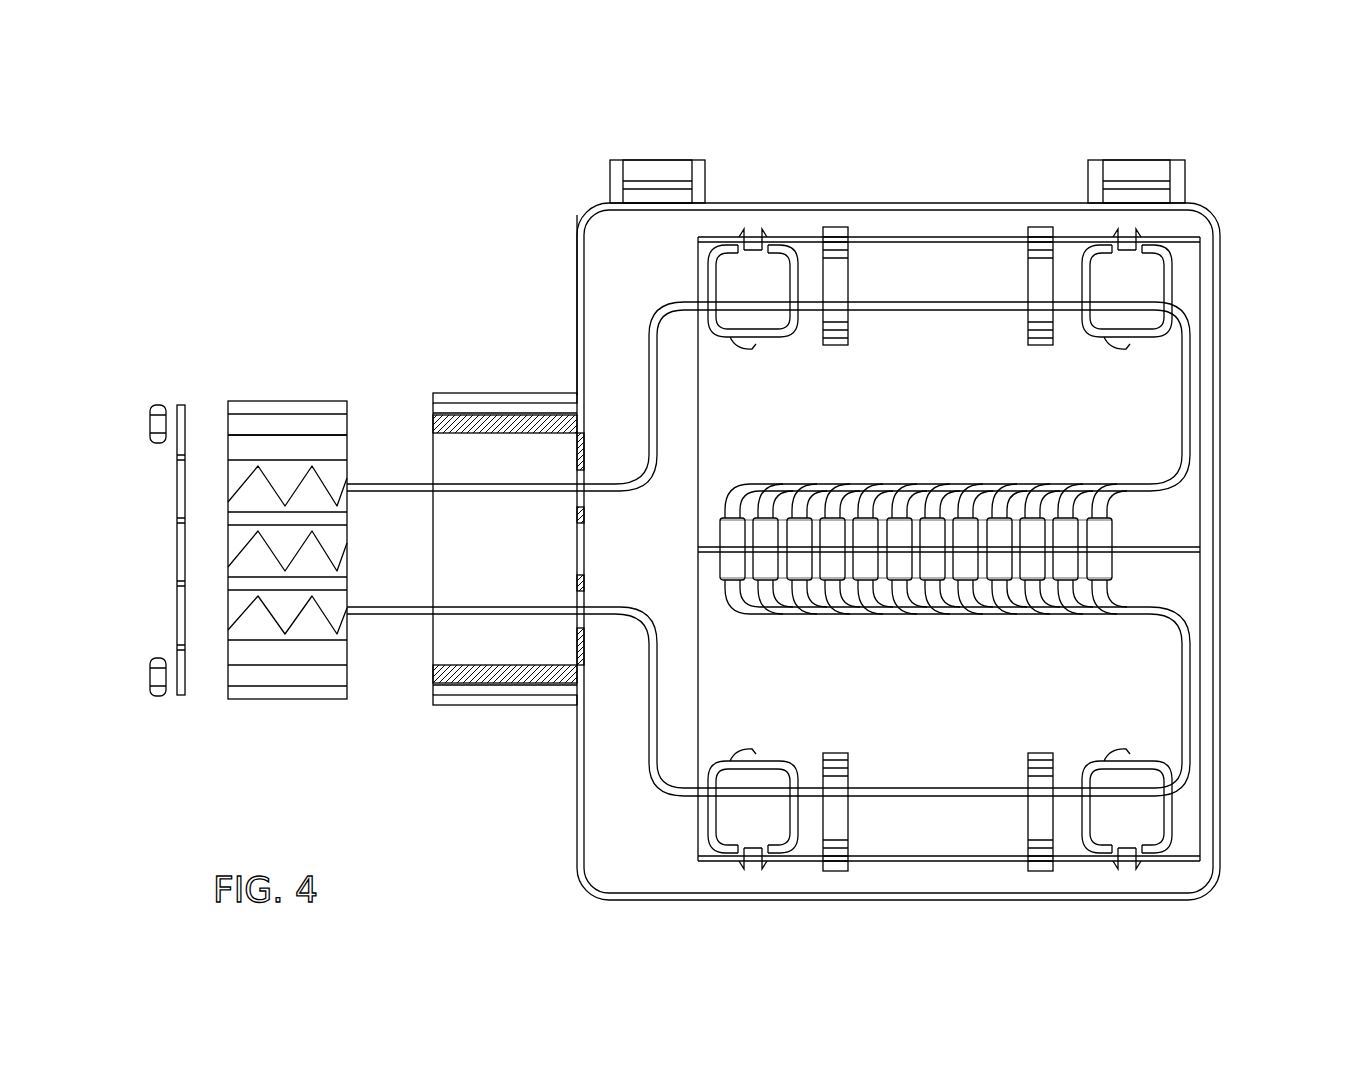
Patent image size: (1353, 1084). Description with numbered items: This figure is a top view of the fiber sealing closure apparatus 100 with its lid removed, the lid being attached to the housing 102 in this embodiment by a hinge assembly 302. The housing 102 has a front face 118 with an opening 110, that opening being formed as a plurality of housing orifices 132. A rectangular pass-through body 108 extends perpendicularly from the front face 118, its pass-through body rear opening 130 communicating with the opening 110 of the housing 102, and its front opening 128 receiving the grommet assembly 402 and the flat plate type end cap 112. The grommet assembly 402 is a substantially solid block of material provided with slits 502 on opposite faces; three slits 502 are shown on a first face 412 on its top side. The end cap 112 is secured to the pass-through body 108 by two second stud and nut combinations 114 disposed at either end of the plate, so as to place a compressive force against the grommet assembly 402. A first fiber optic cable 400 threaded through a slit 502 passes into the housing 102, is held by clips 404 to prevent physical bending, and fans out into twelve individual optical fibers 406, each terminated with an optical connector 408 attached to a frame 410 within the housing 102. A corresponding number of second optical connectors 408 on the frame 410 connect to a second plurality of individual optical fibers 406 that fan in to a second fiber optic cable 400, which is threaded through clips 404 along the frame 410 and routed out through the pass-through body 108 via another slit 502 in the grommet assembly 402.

The fiber sealing closure apparatus 100 is at (901, 152).
The housing 102 is at (1218, 222).
The pass-through body 108 is at (457, 415).
The opening 110 is at (604, 436).
The end cap 112 is at (188, 657).
The second stud and nut combinations 114 is at (455, 393).
The front face 118 is at (577, 283).
The front opening 128 is at (436, 660).
The pass-through body rear opening 130 is at (595, 653).
The housing orifices 132 is at (580, 597).
The hinge assembly 302 is at (662, 160).
The fiber optic cables 400 is at (350, 712).
The grommet assembly 402 is at (267, 401).
The clips 404 is at (1135, 345).
The individual optical fibers 406 is at (1155, 463).
The optical connectors 408 is at (713, 572).
The frame 410 is at (1180, 525).
The first face 412 is at (265, 449).
The slits 502 is at (335, 600).